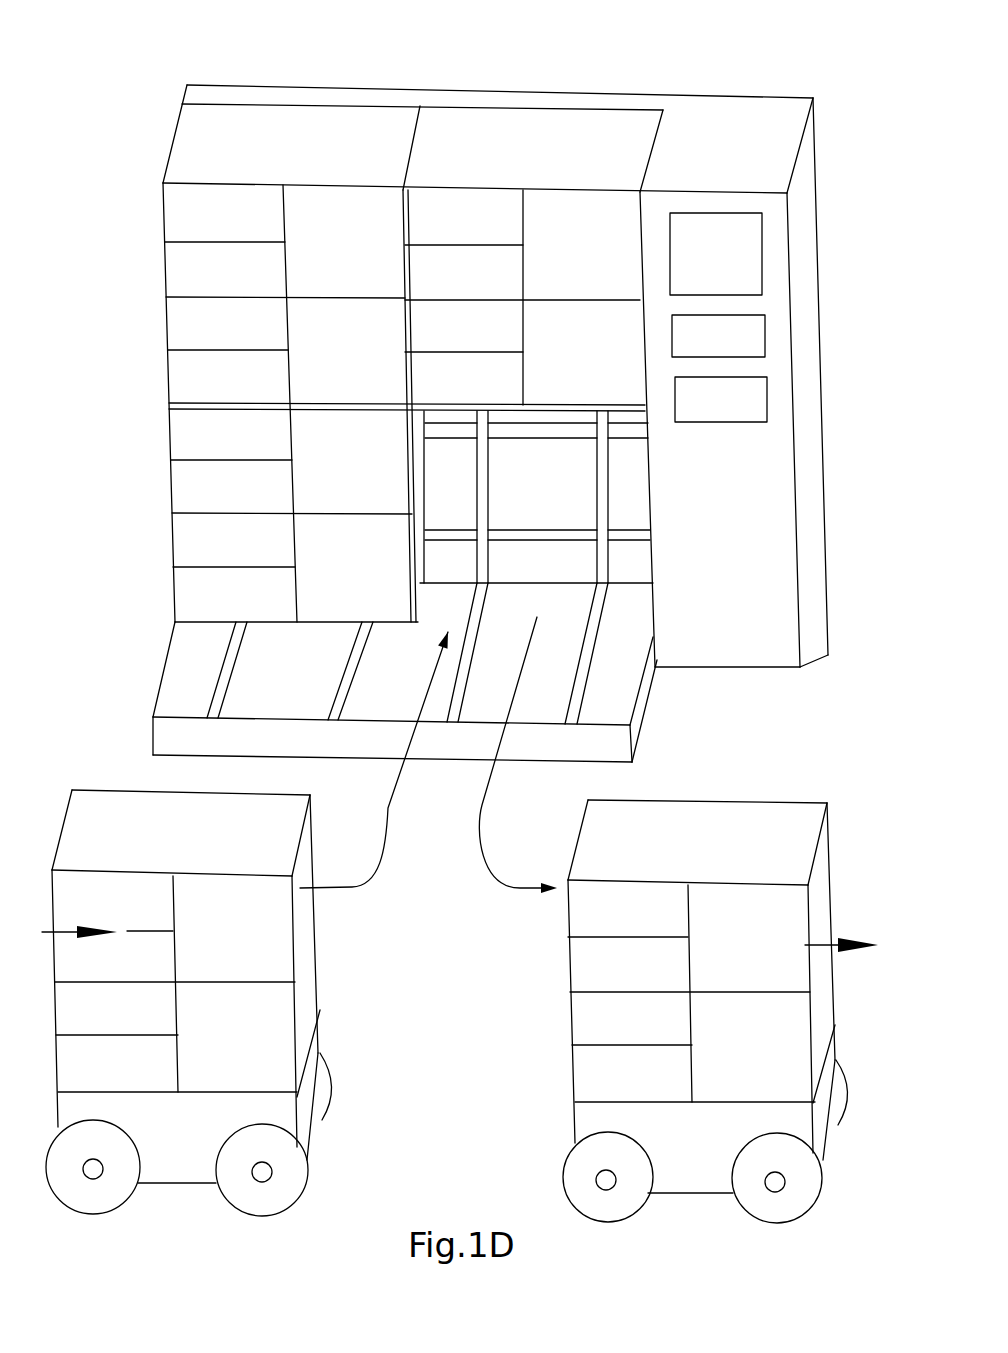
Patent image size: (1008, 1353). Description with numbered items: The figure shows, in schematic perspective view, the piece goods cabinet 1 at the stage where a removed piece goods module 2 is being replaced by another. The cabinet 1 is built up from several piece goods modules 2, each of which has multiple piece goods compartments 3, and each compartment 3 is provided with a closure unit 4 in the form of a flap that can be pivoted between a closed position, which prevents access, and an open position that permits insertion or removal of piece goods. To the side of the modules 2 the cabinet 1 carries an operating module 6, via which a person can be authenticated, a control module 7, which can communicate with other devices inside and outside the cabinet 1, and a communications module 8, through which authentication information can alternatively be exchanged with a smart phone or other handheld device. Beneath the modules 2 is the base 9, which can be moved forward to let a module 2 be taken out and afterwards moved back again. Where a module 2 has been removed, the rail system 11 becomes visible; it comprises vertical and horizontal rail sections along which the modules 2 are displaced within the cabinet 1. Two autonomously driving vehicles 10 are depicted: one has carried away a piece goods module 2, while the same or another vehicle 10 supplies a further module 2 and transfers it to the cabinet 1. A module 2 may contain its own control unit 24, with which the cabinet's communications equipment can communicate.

The piece goods cabinet 1 is at (112, 77).
The piece goods module 2 is at (348, 125).
The piece goods compartment 3 is at (463, 200).
The closure unit 4 is at (432, 643).
The operating module 6 is at (750, 258).
The control module 7 is at (752, 333).
The communications module 8 is at (755, 398).
The base 9 is at (173, 733).
The autonomously driving vehicle 10 is at (188, 1163).
The rail system 11 is at (652, 500).
The control unit 24 is at (830, 847).